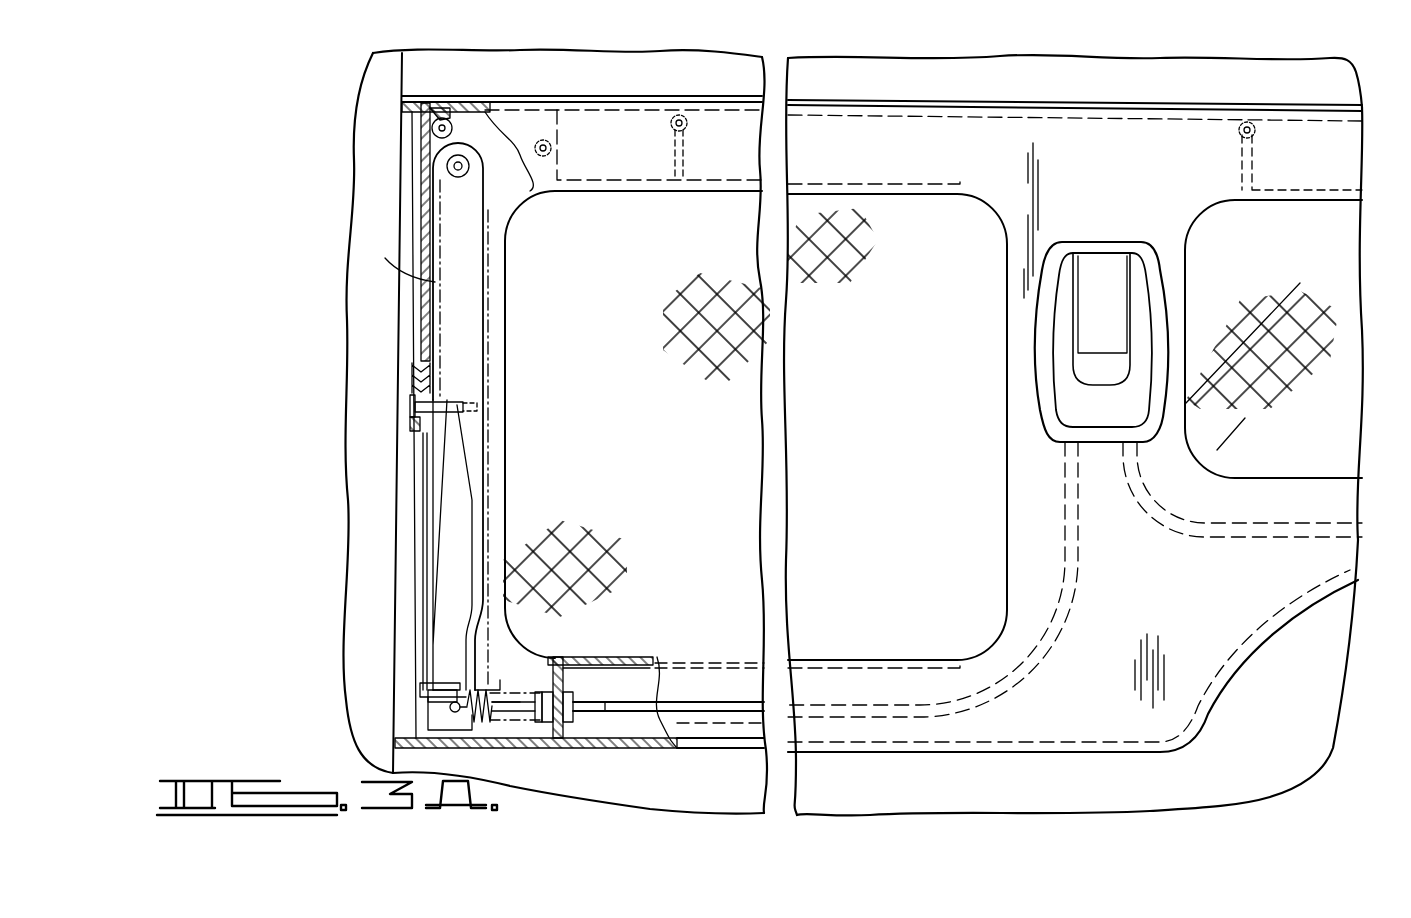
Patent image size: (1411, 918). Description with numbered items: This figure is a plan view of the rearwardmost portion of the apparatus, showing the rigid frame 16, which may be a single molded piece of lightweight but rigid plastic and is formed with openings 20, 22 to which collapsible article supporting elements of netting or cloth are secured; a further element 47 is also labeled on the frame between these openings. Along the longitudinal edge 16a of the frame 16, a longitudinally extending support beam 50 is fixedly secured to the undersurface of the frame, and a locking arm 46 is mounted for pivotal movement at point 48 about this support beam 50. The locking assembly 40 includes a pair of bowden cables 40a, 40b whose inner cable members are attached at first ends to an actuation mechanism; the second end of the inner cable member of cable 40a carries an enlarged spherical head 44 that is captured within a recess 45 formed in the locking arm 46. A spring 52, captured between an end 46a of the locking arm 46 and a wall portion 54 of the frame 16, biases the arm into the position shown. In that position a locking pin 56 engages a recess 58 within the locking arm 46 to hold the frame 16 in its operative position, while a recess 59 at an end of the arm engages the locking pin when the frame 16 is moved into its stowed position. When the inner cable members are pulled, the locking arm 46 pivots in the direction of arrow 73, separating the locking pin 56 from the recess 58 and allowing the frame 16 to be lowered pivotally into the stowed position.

The rigid frame 16 is at (1207, 730).
The longitudinal edge 16a is at (462, 108).
The opening 20 is at (1278, 480).
The opening 22 is at (1005, 504).
The locking assembly 40 is at (646, 718).
The bowden cable 40a is at (522, 714).
The bowden cable 40b is at (1156, 524).
The enlarged spherical head 44 is at (440, 735).
The recess 45 is at (450, 705).
The locking arm 46 is at (463, 345).
The end of the locking arm 46a is at (465, 668).
The handle 47 is at (1069, 239).
The pivot point 48 is at (447, 165).
The support beam 50 is at (478, 130).
The spring 52 is at (490, 700).
The wall portion 54 is at (560, 692).
The locking pin 56 is at (410, 406).
The recess 58 is at (477, 406).
The recess 59 is at (440, 690).
The arrow 73 is at (528, 266).